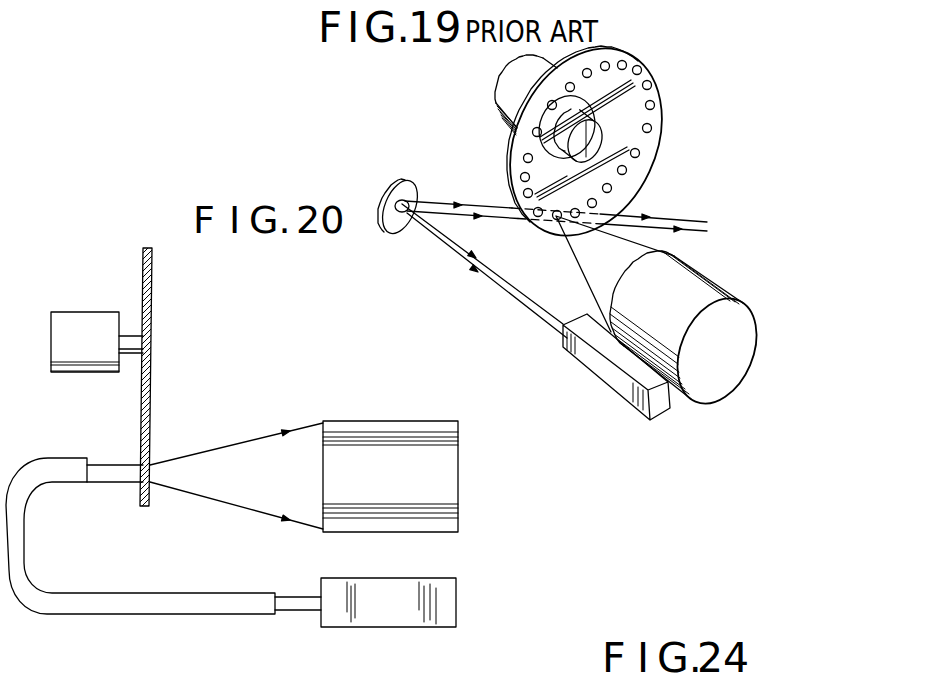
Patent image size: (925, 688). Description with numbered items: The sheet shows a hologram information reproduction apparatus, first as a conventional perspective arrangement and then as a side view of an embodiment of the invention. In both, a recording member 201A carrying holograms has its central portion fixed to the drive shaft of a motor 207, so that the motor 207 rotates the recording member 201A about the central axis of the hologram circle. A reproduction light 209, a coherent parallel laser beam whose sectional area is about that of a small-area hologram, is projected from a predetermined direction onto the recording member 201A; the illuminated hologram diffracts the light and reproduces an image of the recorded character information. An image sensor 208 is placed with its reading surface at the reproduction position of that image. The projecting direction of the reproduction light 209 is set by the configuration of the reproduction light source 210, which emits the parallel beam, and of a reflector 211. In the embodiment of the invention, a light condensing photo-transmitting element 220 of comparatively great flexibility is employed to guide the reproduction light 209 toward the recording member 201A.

In FIG. 19, the recording member 201A is at (658, 72).
In FIG. 20, the recording member 201A is at (152, 374).
In FIG. 19, the motor 207 is at (496, 90).
In FIG. 20, the motor 207 is at (77, 312).
In FIG. 19, the image sensor 208 is at (758, 325).
In FIG. 20, the image sensor 208 is at (457, 477).
In FIG. 19, the reproduction light 209 is at (476, 202).
In FIG. 20, the reproduction light 209 is at (105, 484).
In FIG. 19, the reproduction light source 210 is at (606, 378).
In FIG. 20, the reproduction light source 210 is at (389, 627).
In FIG. 19, the reflector 211 is at (383, 234).
In FIG. 20, the light condensing photo-transmitting element 220 is at (120, 614).